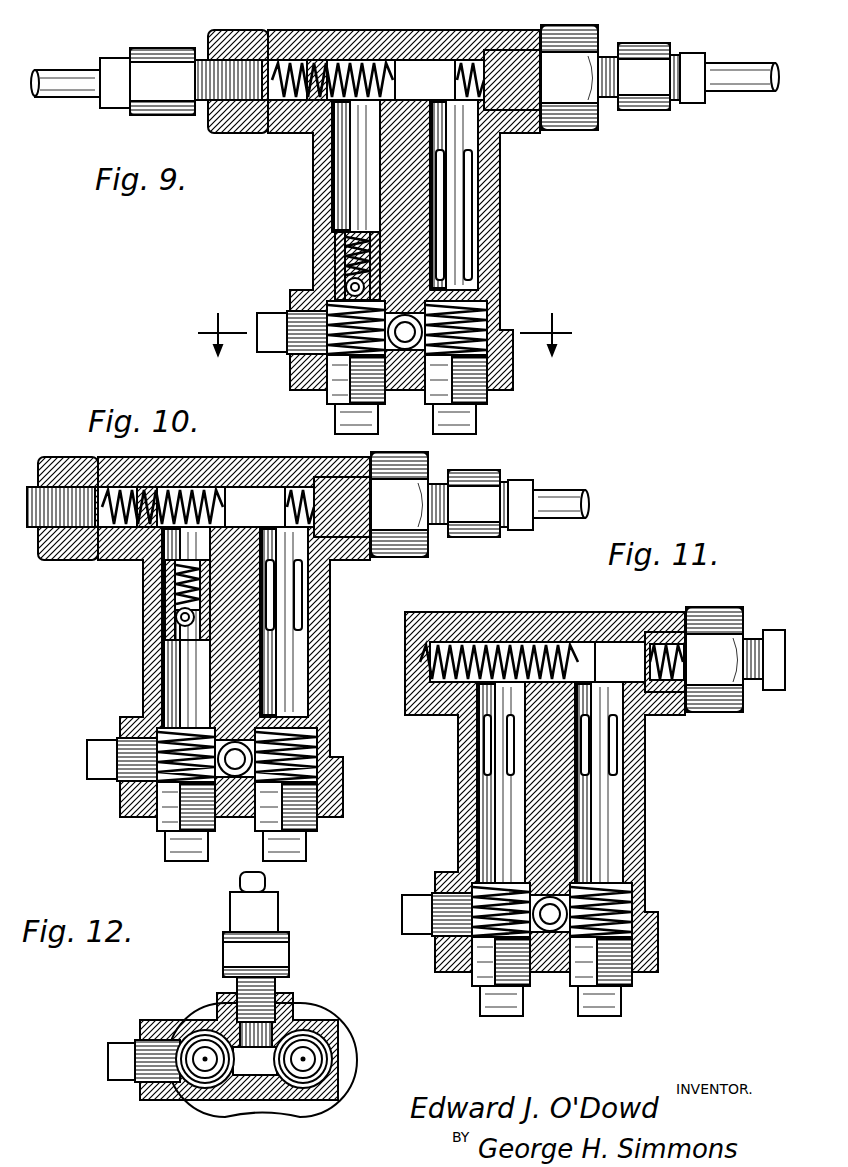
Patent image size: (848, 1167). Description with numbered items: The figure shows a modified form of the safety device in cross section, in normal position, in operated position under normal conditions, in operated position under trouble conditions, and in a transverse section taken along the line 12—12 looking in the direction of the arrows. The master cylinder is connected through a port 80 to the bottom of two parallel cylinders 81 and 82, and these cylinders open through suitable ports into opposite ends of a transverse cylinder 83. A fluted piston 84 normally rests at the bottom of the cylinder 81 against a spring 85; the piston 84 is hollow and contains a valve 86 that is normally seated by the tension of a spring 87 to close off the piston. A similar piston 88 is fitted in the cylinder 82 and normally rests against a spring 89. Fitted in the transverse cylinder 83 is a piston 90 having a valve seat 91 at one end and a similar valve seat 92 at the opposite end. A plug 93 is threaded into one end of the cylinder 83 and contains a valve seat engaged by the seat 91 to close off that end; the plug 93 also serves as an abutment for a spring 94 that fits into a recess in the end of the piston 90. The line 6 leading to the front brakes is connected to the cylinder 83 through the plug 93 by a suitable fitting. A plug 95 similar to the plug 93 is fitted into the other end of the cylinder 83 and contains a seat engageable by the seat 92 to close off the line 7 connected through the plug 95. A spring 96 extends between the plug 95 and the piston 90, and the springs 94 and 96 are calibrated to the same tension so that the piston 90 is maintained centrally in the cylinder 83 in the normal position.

In FIG. 9, the line 6 is at (72, 90).
In FIG. 9, the line 7 is at (750, 82).
In FIG. 10, the line 7 is at (508, 516).
In FIG. 9, the section line 12 is at (385, 318).
In FIG. 9, the port 80 is at (405, 345).
In FIG. 10, the port 80 is at (235, 800).
In FIG. 11, the port 80 is at (550, 965).
In FIG. 12, the port 80 is at (280, 1002).
In FIG. 9, the cylinder 81 is at (350, 190).
In FIG. 10, the cylinder 81 is at (150, 628).
In FIG. 11, the cylinder 81 is at (463, 783).
In FIG. 9, the cylinder 82 is at (462, 194).
In FIG. 10, the cylinder 82 is at (320, 622).
In FIG. 11, the cylinder 82 is at (640, 783).
In FIG. 9, the transverse cylinder 83 is at (445, 44).
In FIG. 10, the transverse cylinder 83 is at (231, 621).
In FIG. 11, the transverse cylinder 83 is at (545, 775).
In FIG. 9, the fluted piston 84 is at (338, 234).
In FIG. 10, the fluted piston 84 is at (153, 600).
In FIG. 11, the fluted piston 84 is at (460, 753).
In FIG. 9, the spring 85 is at (340, 342).
In FIG. 10, the spring 85 is at (140, 794).
In FIG. 11, the spring 85 is at (463, 949).
In FIG. 12, the spring 85 is at (196, 1076).
In FIG. 9, the valve 86 is at (348, 286).
In FIG. 10, the valve 86 is at (146, 636).
In FIG. 9, the spring 87 is at (340, 256).
In FIG. 10, the spring 87 is at (149, 586).
In FIG. 9, the piston 88 is at (472, 275).
In FIG. 10, the piston 88 is at (321, 595).
In FIG. 11, the piston 88 is at (638, 753).
In FIG. 9, the spring 89 is at (478, 343).
In FIG. 10, the spring 89 is at (323, 790).
In FIG. 11, the spring 89 is at (643, 949).
In FIG. 12, the spring 89 is at (305, 1076).
In FIG. 9, the piston 90 is at (441, 83).
In FIG. 10, the piston 90 is at (255, 506).
In FIG. 11, the piston 90 is at (620, 630).
In FIG. 9, the valve seat 91 is at (355, 62).
In FIG. 10, the valve seat 91 is at (165, 474).
In FIG. 11, the valve seat 91 is at (499, 628).
In FIG. 9, the valve seat 92 is at (492, 56).
In FIG. 10, the valve seat 92 is at (309, 474).
In FIG. 11, the valve seat 92 is at (668, 629).
In FIG. 9, the plug 93 is at (225, 115).
In FIG. 10, the plug 93 is at (62, 525).
In FIG. 9, the spring 94 is at (280, 128).
In FIG. 10, the spring 94 is at (127, 538).
In FIG. 11, the spring 94 is at (431, 716).
In FIG. 9, the plug 95 is at (578, 122).
In FIG. 10, the plug 95 is at (408, 518).
In FIG. 11, the plug 95 is at (735, 670).
In FIG. 9, the spring 96 is at (505, 128).
In FIG. 10, the spring 96 is at (346, 531).
In FIG. 11, the spring 96 is at (673, 692).